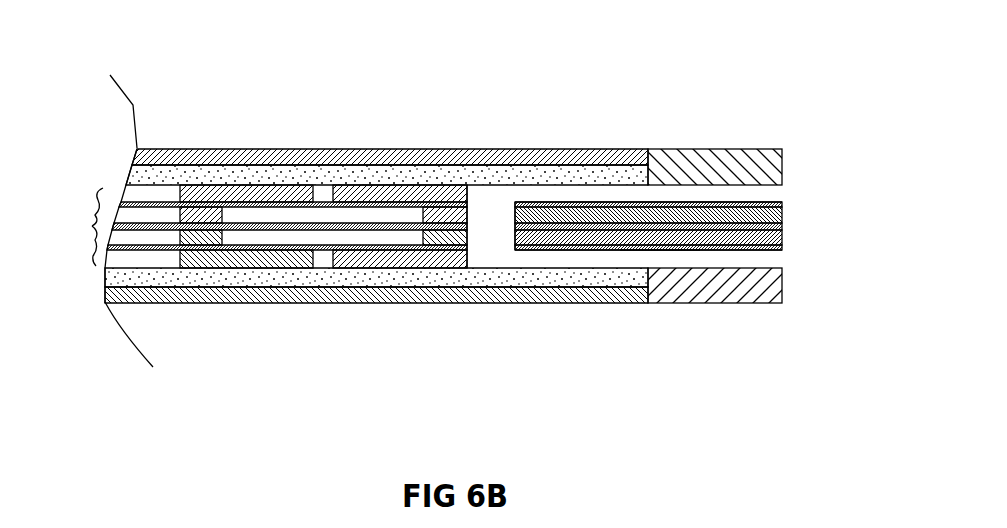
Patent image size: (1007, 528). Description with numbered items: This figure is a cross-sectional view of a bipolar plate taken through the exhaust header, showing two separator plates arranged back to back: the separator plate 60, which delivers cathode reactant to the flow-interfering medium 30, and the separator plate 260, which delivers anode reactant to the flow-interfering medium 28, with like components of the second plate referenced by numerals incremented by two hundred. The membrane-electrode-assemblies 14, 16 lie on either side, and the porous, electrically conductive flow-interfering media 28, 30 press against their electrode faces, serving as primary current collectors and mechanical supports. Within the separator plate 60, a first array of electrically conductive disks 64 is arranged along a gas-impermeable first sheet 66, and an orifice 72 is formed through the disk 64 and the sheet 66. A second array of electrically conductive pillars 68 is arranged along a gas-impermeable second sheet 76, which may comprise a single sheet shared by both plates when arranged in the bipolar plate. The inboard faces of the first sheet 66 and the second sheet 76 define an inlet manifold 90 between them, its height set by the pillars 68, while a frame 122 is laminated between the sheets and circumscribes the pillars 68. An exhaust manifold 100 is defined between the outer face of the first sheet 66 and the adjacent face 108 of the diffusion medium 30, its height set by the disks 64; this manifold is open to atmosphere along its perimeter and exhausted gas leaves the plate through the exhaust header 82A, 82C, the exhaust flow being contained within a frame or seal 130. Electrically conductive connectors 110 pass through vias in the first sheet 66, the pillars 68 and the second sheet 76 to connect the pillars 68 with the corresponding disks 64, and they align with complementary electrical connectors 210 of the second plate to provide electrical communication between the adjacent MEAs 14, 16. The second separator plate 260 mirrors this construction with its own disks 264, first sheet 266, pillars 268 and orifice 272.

The membrane-electrode-assembly 14 is at (632, 150).
The membrane-electrode-assembly 16 is at (622, 297).
The flow-interfering medium 28 is at (130, 170).
The flow-interfering medium 30 is at (105, 300).
The separator plate 60 is at (73, 246).
The disks 64 is at (415, 262).
The first sheet 66 is at (573, 250).
The pillars 68 is at (470, 265).
The orifice 72 is at (333, 262).
The second sheet 76 is at (148, 228).
The exhaust header 82A is at (715, 192).
The exhaust header 82C is at (708, 262).
The inlet manifold 90 is at (242, 238).
The exhaust manifold 100 is at (510, 263).
The adjacent face of the diffusion medium 108 is at (637, 270).
The electrically conductive connectors 110 is at (190, 243).
The frame 122 is at (783, 215).
The frame or seal 130 is at (762, 180).
The complementary electrical connectors 210 is at (200, 212).
The separator plate 260 is at (75, 207).
The disks 264 is at (443, 192).
The first sheet 266 is at (573, 202).
The pillars 268 is at (467, 208).
The orifice 272 is at (332, 192).